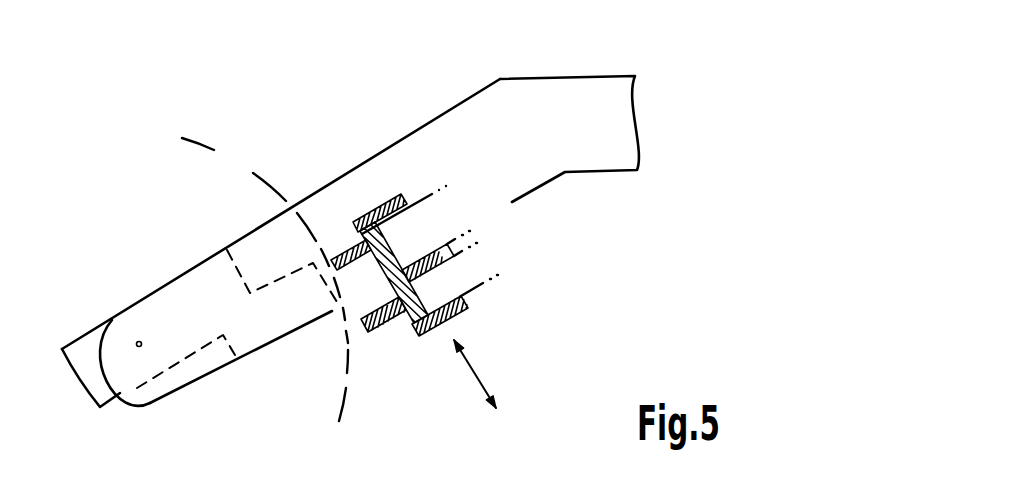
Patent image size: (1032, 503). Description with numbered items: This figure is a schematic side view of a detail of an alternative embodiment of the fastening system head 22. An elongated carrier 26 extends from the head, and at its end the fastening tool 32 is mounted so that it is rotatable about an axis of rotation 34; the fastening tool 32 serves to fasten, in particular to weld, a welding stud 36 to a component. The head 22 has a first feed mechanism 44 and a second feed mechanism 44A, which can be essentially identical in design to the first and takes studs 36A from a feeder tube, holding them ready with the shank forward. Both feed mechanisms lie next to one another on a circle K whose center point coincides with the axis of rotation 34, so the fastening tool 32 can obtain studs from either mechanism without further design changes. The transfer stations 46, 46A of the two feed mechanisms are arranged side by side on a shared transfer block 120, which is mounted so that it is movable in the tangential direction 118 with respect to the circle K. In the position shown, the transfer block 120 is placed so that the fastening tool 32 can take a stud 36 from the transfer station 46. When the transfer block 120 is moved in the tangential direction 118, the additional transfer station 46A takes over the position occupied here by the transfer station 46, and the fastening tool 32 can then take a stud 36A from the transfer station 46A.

The fastening system head 22 is at (765, 177).
The elongated carrier 26 is at (601, 131).
The fastening tool 32 is at (85, 348).
The axis of rotation 34 is at (139, 344).
The welding stud 36 is at (356, 246).
The stud 36A is at (378, 334).
The first feed mechanism 44 is at (483, 188).
The second feed mechanism 44A is at (519, 250).
The transfer station 46 is at (407, 193).
The additional transfer station 46A is at (468, 303).
The tangential direction 118 is at (471, 373).
The transfer block 120 is at (436, 330).
The circle K is at (207, 150).